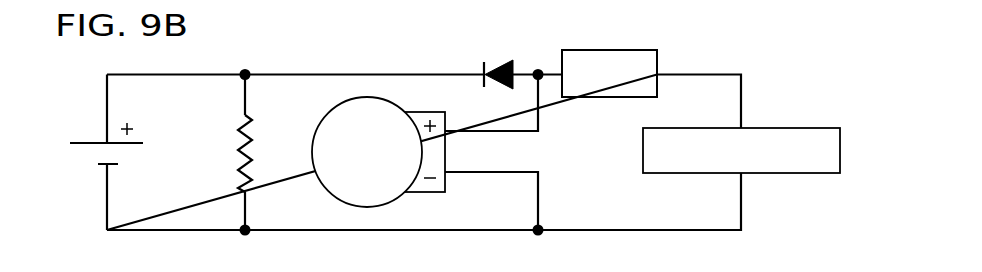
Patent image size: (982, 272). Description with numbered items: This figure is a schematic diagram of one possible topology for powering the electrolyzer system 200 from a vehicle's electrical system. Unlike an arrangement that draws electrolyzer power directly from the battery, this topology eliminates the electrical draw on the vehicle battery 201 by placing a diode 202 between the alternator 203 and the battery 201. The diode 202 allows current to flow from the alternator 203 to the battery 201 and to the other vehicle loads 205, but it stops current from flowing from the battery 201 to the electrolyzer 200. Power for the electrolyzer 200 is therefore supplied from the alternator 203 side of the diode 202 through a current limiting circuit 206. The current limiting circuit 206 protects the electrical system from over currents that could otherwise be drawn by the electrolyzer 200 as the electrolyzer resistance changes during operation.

The electrolyzer system 200 is at (770, 128).
The vehicle battery 201 is at (116, 164).
The diode 202 is at (484, 84).
The alternator 203 is at (332, 197).
The other vehicle loads 205 is at (242, 118).
The current limiting circuit 206 is at (624, 98).